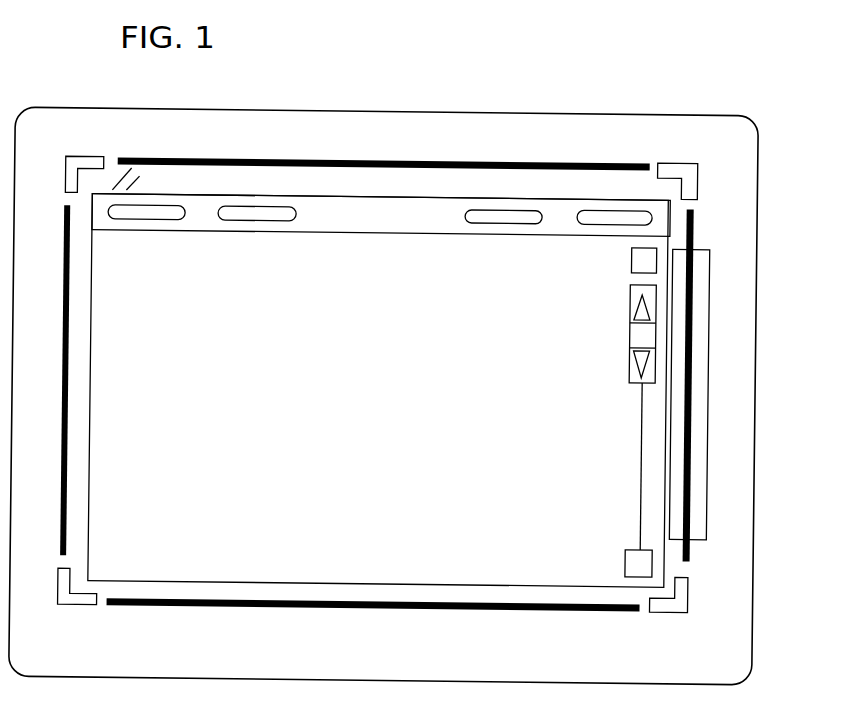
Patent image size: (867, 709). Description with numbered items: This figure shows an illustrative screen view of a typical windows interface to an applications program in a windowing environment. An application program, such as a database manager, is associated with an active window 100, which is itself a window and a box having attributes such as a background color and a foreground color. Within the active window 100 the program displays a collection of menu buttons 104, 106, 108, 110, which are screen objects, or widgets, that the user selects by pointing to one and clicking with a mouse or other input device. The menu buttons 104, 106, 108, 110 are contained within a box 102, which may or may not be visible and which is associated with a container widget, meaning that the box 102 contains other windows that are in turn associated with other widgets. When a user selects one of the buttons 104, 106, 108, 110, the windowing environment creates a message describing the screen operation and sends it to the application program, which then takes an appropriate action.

The active window 100 is at (689, 326).
The box 102 is at (448, 209).
The menu button 104 is at (176, 205).
The menu button 106 is at (287, 211).
The menu button 108 is at (520, 206).
The menu button 110 is at (630, 207).